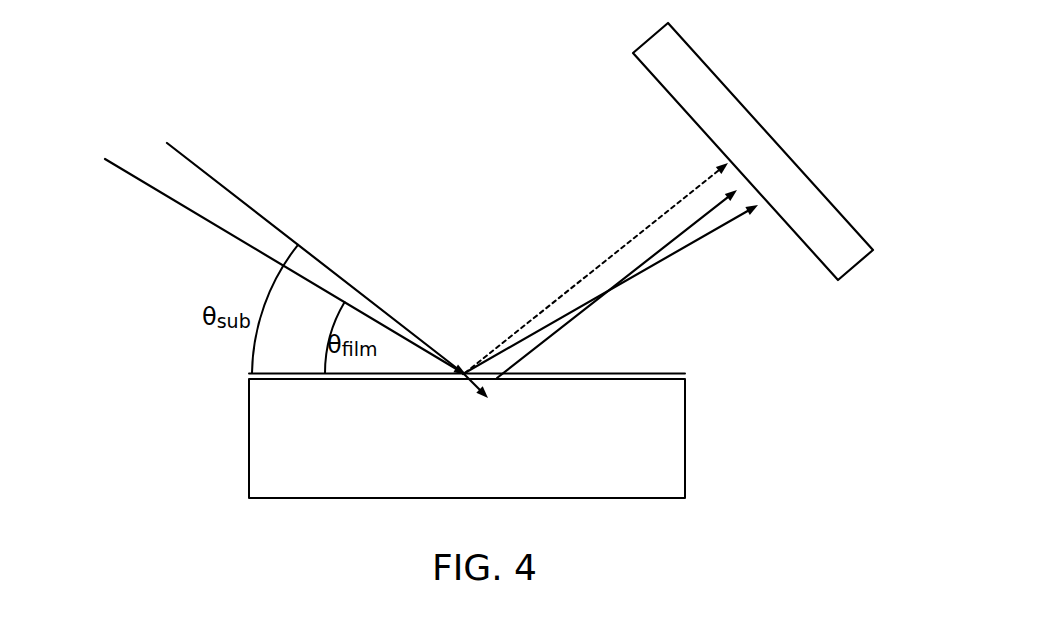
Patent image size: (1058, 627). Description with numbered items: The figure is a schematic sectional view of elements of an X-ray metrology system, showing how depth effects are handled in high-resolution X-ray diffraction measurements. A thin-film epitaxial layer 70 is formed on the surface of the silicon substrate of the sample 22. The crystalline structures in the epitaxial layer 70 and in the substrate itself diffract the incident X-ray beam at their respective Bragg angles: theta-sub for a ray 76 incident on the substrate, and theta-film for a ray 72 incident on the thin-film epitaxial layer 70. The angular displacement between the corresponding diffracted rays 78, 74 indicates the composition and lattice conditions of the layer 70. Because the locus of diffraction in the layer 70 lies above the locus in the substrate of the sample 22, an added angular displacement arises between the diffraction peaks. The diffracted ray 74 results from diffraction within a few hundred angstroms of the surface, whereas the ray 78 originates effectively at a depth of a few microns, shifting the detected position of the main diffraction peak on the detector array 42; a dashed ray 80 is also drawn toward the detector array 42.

The sample 22 is at (685, 386).
The thin-film epitaxial layer 70 is at (670, 372).
The ray incident on the thin-film epitaxial layer 72 is at (188, 209).
The ray incident on the substrate 76 is at (270, 222).
The diffracted ray 74 is at (711, 233).
The diffracted ray 78 is at (670, 244).
The reflected light ray (dashed) 80 is at (637, 236).
The detector array 42 is at (848, 272).